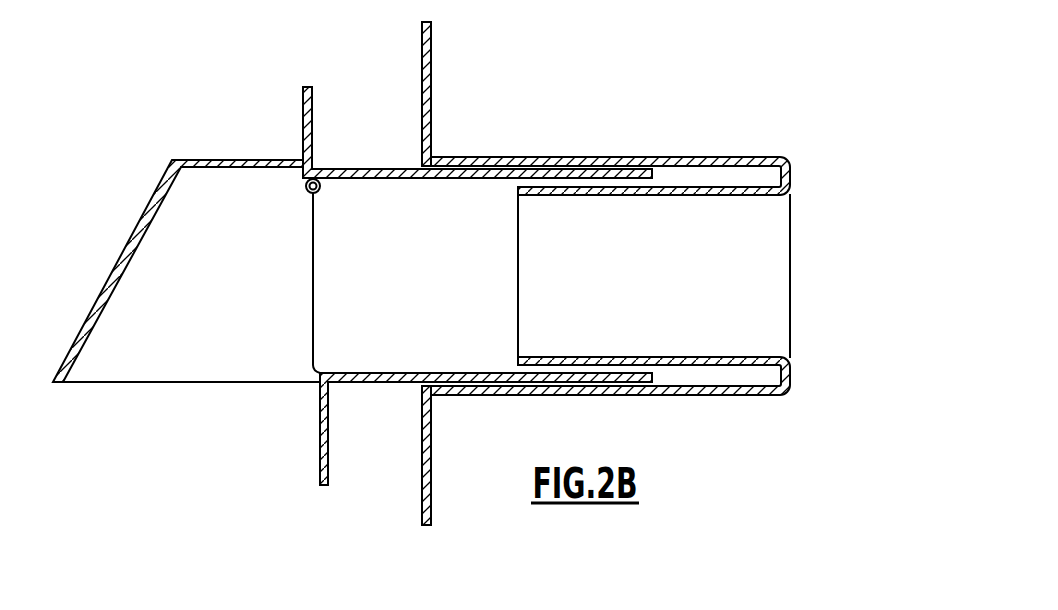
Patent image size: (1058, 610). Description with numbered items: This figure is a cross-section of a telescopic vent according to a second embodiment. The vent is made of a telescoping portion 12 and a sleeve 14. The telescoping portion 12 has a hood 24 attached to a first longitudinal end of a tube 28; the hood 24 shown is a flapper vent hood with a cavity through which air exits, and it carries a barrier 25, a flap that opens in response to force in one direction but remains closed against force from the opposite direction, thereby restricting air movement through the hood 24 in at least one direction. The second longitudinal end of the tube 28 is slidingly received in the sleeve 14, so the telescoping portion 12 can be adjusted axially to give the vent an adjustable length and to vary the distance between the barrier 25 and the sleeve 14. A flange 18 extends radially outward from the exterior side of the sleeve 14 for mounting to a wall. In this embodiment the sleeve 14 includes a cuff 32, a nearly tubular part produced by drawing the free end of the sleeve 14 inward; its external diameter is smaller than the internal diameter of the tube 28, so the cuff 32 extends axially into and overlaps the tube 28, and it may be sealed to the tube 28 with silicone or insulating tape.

The telescoping portion 12 is at (150, 88).
The sleeve 14 is at (615, 157).
The flange 18 is at (431, 45).
The hood 24 is at (240, 160).
The barrier 25 is at (312, 260).
The tube 28 is at (327, 168).
The cuff 32 is at (688, 194).